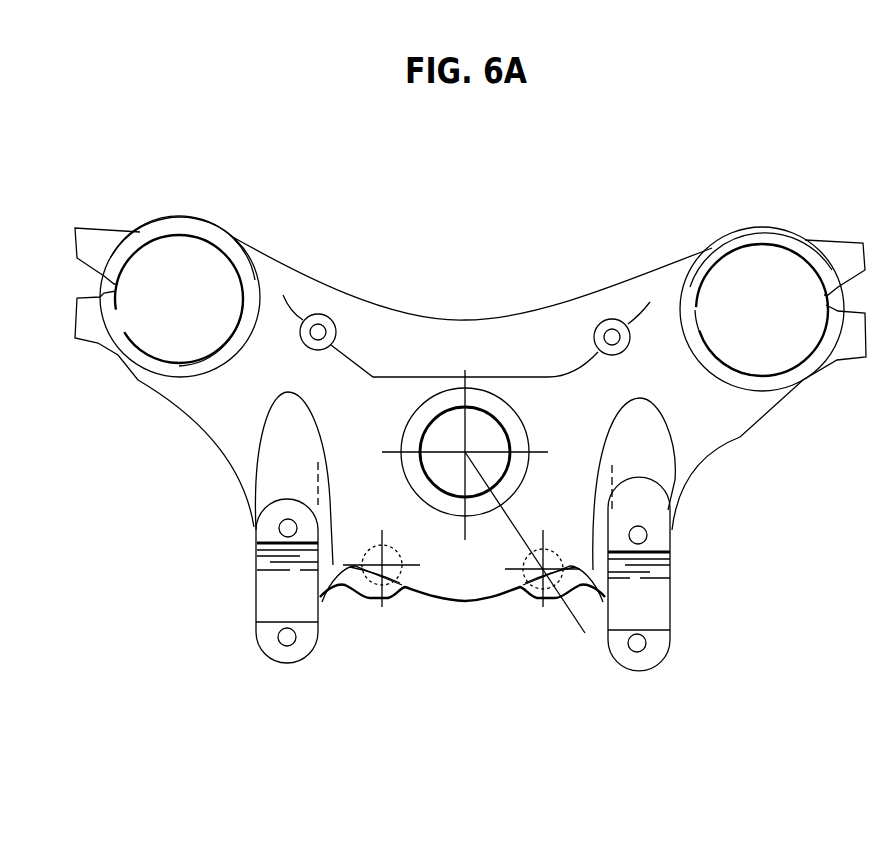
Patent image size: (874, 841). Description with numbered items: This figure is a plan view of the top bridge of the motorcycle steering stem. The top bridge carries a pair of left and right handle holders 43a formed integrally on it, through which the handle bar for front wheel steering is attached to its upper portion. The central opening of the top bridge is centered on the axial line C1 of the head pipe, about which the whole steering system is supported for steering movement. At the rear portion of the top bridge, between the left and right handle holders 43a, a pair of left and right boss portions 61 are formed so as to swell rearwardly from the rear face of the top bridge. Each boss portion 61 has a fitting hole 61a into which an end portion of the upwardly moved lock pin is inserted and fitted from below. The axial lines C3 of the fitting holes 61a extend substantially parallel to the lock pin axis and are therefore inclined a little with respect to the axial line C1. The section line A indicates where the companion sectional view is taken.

The handle holder 43a is at (287, 656).
The boss portion 61 is at (397, 607).
The fitting hole 61a is at (370, 593).
The axial line of the head pipe C1 is at (465, 452).
The axial line of the fitting hole C3 is at (402, 592).
The section line A- A is at (462, 462).